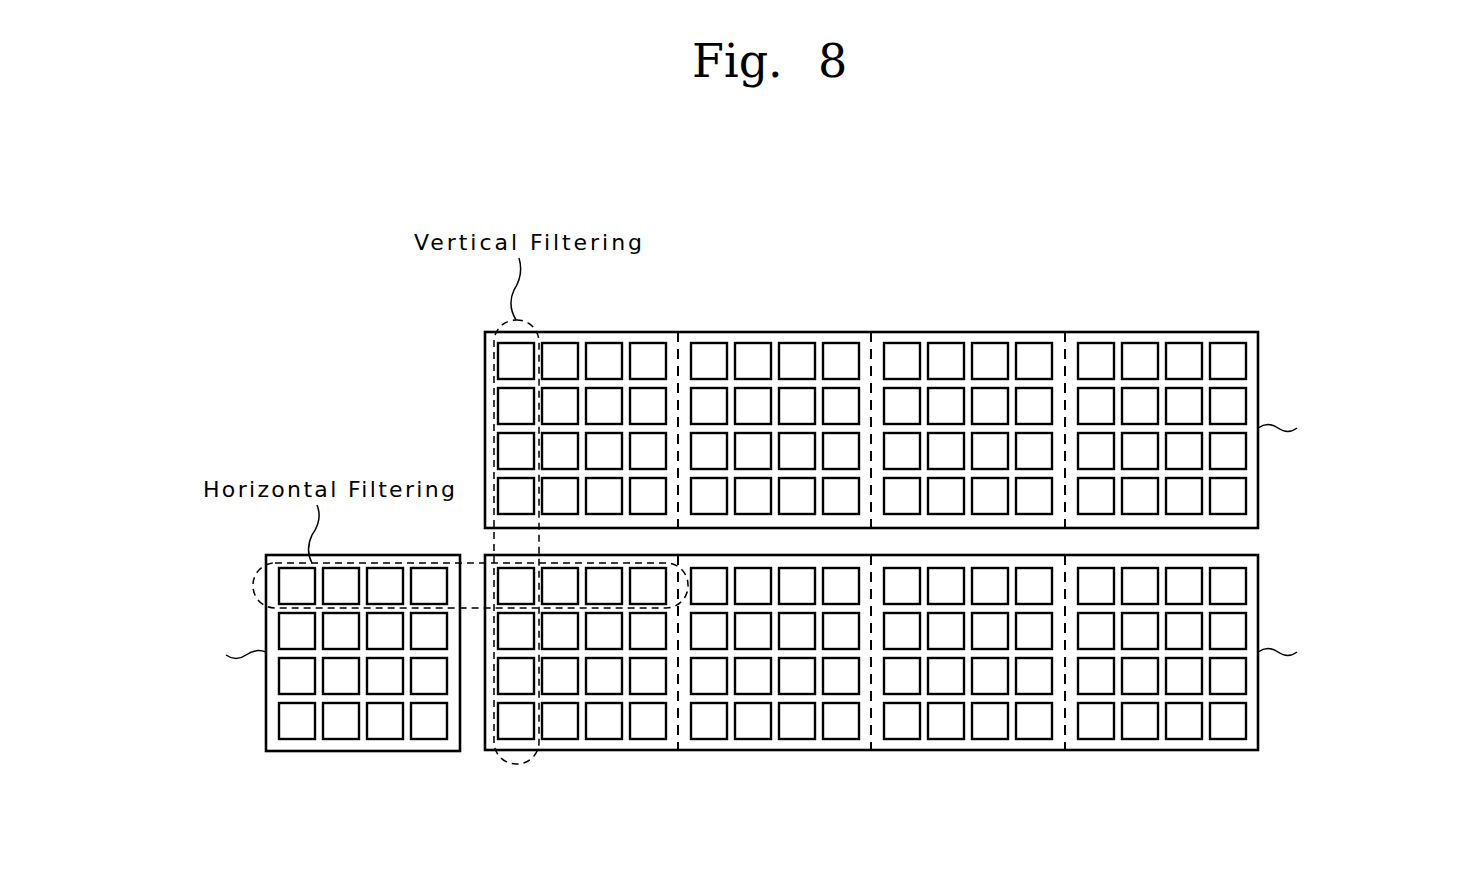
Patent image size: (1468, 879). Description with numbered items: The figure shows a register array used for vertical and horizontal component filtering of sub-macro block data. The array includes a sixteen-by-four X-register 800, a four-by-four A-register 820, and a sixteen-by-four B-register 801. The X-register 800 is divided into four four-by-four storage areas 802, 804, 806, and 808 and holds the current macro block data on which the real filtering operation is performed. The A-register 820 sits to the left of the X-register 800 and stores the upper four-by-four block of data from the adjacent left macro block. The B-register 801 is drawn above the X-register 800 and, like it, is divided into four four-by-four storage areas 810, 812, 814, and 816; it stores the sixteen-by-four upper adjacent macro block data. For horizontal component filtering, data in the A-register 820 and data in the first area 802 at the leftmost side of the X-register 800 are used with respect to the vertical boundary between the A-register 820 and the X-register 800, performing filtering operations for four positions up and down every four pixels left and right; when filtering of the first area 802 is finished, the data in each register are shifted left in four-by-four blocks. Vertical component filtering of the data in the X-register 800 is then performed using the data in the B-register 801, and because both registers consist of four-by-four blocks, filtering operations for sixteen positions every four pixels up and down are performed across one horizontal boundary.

The X-register 800 is at (1284, 606).
The B-register 801 is at (1284, 382).
The first area 802 is at (678, 760).
The storage area 804 is at (871, 760).
The storage area 806 is at (1065, 760).
The storage area 808 is at (1258, 760).
The storage area 810 is at (678, 322).
The storage area 812 is at (871, 322).
The storage area 814 is at (1065, 322).
The storage area 816 is at (1258, 322).
The A-register 820 is at (460, 760).